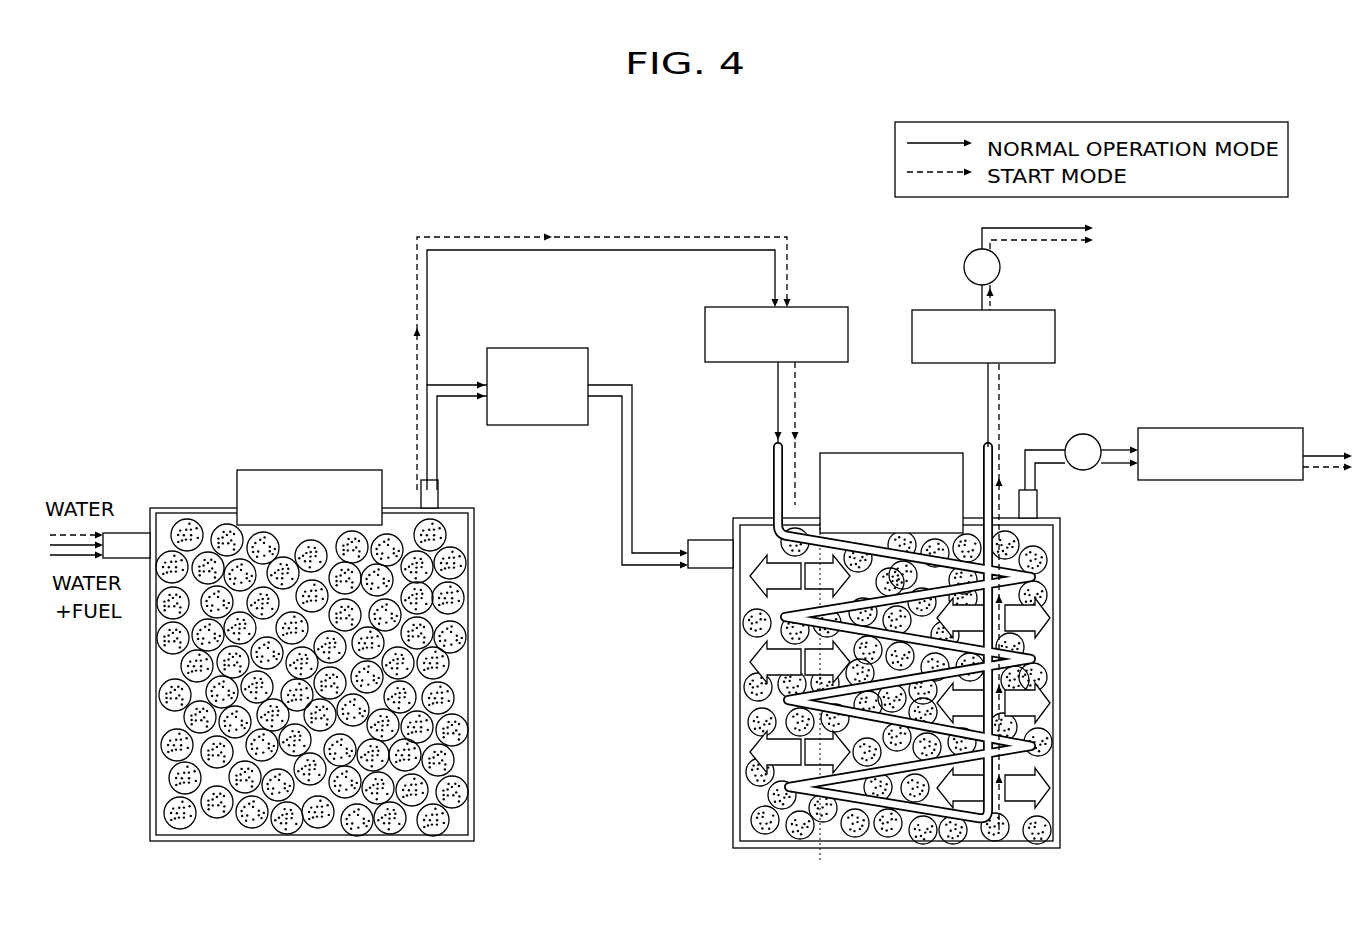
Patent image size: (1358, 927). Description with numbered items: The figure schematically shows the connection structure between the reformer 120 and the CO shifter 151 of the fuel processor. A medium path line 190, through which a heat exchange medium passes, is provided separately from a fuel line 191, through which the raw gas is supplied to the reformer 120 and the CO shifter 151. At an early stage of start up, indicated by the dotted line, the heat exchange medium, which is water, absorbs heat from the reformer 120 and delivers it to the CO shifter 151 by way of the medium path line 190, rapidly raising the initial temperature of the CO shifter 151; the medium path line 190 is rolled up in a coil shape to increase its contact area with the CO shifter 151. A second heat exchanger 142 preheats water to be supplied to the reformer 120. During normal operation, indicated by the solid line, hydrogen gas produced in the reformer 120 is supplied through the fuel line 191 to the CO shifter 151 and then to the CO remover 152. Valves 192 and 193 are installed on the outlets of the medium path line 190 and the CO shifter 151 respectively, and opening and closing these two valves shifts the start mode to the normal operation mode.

The reformer 120 is at (182, 508).
The second heat exchanger 142 is at (537, 348).
The CO shifter 151 is at (1063, 727).
The CO remover 152 is at (1235, 428).
The medium path line 190 is at (600, 250).
The fuel line 191 is at (635, 470).
The valve 192 is at (965, 255).
The valve 193 is at (1080, 434).